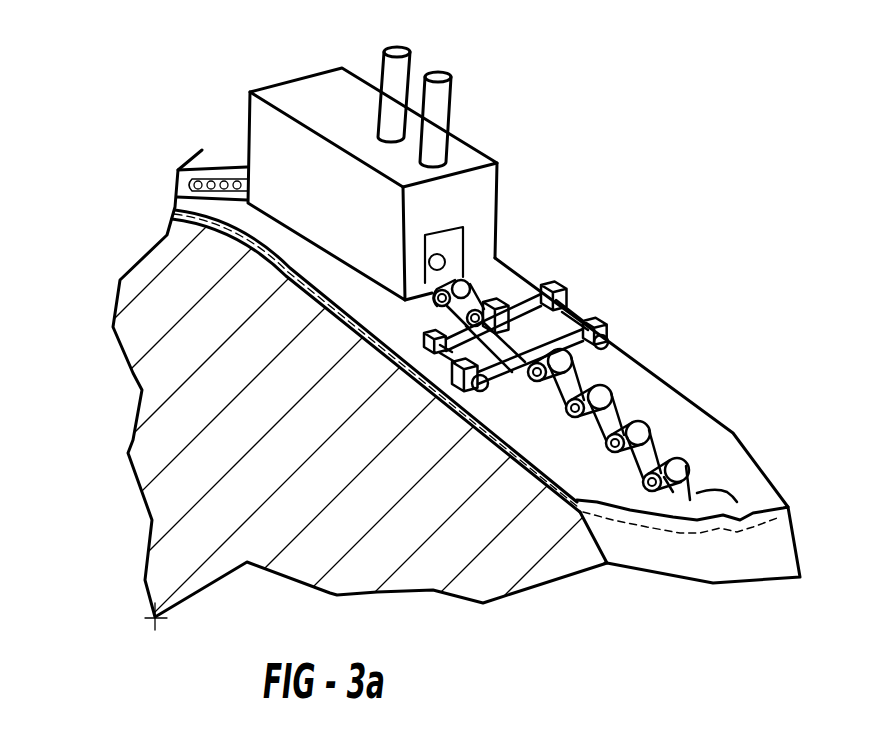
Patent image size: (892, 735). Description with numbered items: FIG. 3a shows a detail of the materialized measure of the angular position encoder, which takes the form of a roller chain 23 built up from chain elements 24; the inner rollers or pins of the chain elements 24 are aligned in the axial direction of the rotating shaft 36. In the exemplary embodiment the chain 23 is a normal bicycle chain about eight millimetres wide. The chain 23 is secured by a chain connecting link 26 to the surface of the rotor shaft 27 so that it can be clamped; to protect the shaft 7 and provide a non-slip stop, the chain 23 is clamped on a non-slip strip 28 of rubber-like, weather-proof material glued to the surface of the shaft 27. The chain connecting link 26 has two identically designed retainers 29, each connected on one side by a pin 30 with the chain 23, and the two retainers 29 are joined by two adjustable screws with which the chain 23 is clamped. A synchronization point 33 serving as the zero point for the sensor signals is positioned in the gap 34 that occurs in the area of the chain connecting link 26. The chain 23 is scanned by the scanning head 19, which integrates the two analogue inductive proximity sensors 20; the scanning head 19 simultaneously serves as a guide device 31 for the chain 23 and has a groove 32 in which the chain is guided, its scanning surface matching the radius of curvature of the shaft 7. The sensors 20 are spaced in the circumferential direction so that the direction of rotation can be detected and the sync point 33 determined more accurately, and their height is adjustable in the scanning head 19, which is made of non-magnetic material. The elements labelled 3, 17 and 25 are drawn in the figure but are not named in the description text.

The housing 3 is at (450, 110).
The shaft 7 is at (308, 374).
The pipes 17 is at (380, 67).
The scanning head 19 is at (358, 204).
The sensors 20 is at (438, 77).
The roller chain 23 is at (627, 365).
The chain elements 24 is at (660, 447).
The chain end link 25 is at (670, 465).
The chain connecting link 26 is at (594, 298).
The rotor shaft 27 is at (600, 547).
The non-slip strip 28 is at (247, 235).
The retainers 29 is at (500, 377).
The pin 30 is at (500, 310).
The guide device 31 is at (478, 192).
The groove 32 is at (448, 250).
The synchronization point 33 is at (612, 311).
The gap 34 is at (440, 378).
The rotating shaft 36 is at (155, 617).